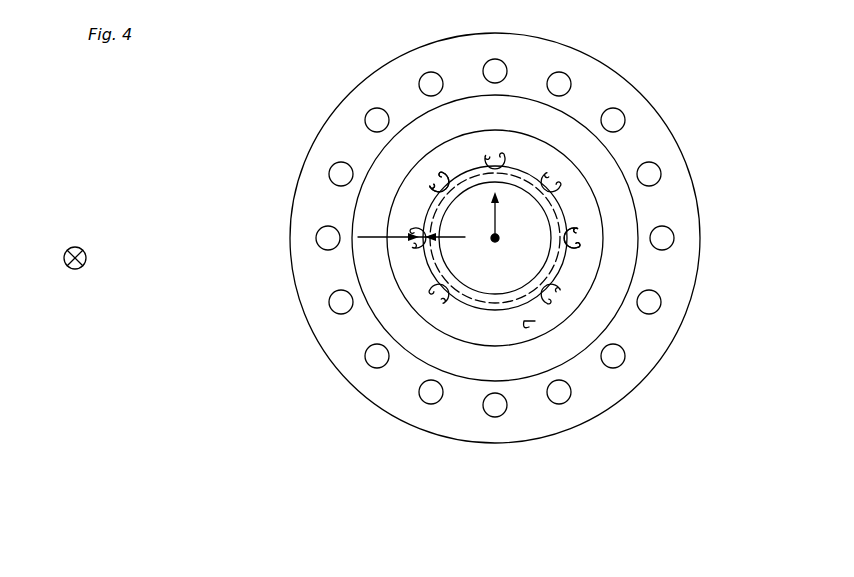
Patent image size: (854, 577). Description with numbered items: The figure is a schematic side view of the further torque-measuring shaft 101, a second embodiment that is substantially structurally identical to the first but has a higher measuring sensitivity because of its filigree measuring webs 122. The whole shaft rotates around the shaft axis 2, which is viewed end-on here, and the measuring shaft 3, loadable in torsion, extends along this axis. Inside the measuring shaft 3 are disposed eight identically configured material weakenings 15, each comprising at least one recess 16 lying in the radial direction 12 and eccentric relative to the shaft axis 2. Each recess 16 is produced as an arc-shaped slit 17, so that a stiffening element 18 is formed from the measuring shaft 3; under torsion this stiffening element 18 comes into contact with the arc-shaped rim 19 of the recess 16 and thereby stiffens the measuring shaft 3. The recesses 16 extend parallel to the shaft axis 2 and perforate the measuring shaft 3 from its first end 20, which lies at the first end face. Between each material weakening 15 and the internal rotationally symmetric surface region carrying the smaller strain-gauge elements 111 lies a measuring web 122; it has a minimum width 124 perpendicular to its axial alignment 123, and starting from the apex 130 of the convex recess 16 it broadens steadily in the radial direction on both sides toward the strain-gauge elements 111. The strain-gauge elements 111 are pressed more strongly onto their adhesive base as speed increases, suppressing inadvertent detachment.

The shaft axis 2 is at (495, 238).
The measuring shaft 3 is at (423, 172).
The radial direction 12 is at (497, 203).
The material weakening 15 is at (579, 212).
The recess 16 is at (582, 246).
The arc-shaped slit 17 is at (565, 160).
The stiffening element 18 is at (402, 193).
The arc-shaped rim 19 is at (492, 148).
The first end 20 is at (535, 321).
The further torque-measuring shaft 101 is at (138, 164).
The strain-gauge element 111 is at (532, 173).
The measuring web 122 is at (502, 161).
The axial alignment 123 is at (86, 262).
The minimum width 124 is at (373, 238).
The apex 130 is at (430, 297).